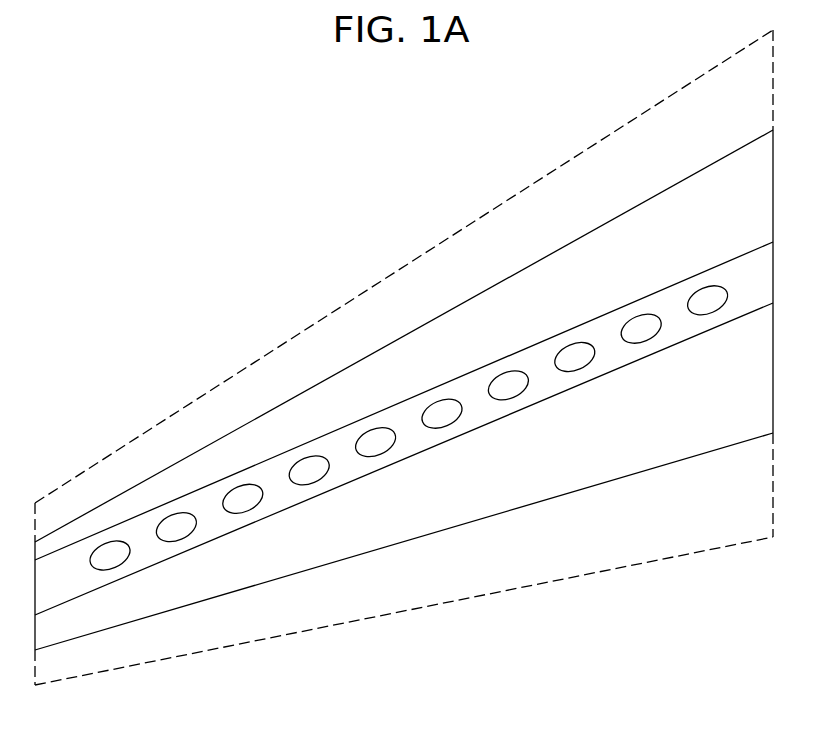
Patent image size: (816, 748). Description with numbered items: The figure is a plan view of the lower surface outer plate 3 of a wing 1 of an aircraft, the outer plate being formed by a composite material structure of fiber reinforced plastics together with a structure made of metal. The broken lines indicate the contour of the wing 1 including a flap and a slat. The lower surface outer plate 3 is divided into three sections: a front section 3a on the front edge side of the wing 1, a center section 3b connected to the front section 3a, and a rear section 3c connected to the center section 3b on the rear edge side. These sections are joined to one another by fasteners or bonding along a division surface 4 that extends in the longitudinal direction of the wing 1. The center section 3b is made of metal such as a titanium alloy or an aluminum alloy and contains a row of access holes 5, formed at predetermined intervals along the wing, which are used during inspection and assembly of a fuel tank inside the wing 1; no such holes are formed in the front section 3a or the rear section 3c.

The wing 1 is at (356, 202).
The lower surface outer plate 3 is at (712, 150).
The front section 3a is at (599, 256).
The center section 3b is at (553, 385).
The rear section 3c is at (507, 492).
The division surface 4 is at (528, 348).
The access holes 5 is at (446, 426).